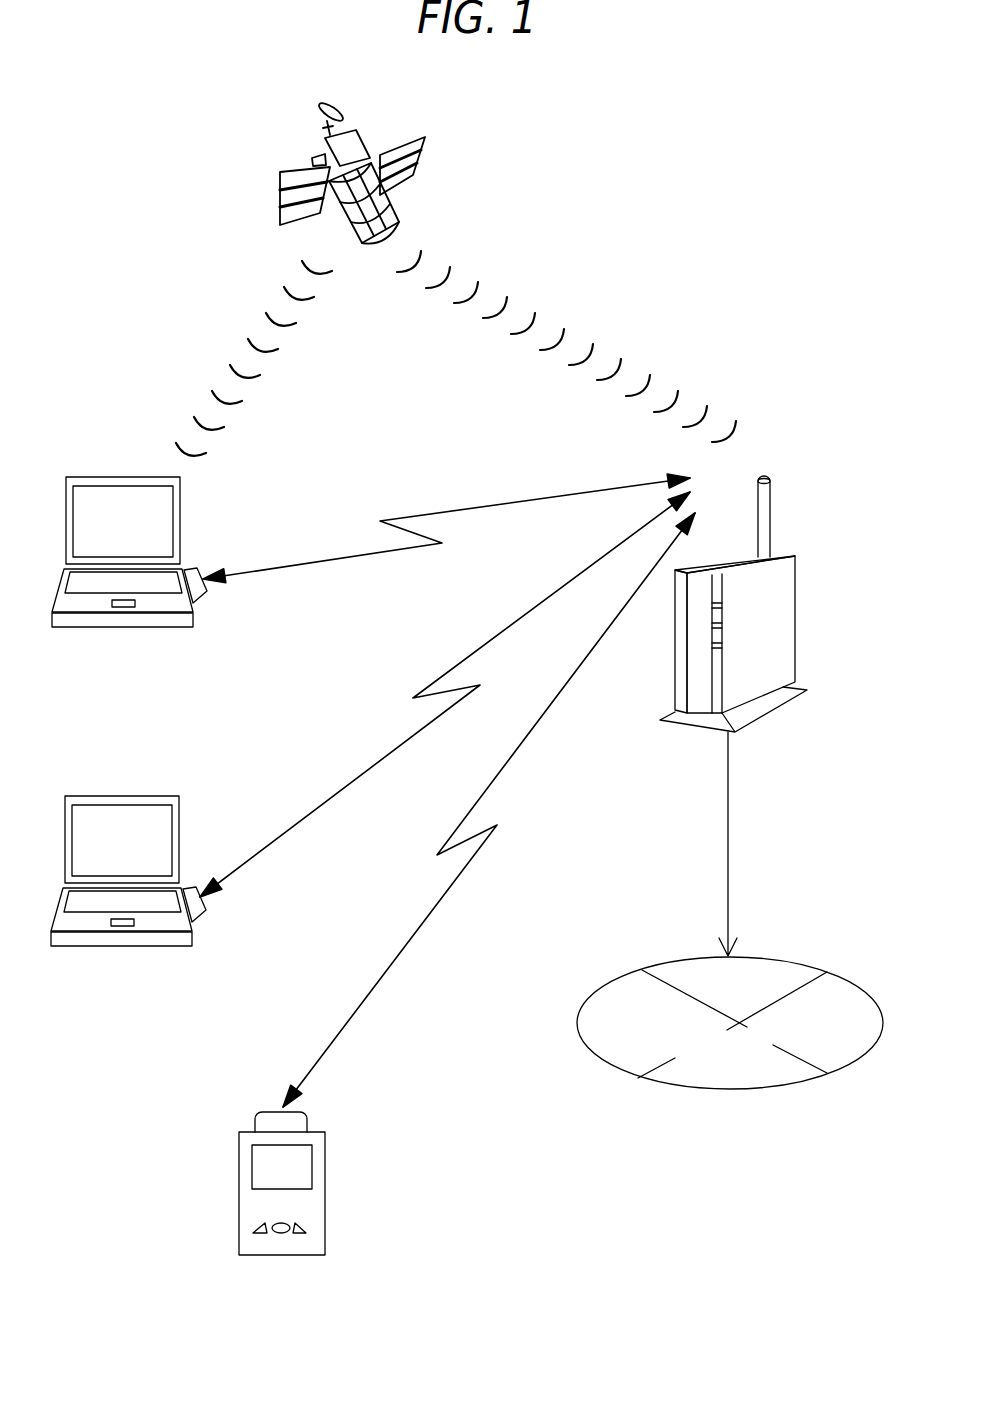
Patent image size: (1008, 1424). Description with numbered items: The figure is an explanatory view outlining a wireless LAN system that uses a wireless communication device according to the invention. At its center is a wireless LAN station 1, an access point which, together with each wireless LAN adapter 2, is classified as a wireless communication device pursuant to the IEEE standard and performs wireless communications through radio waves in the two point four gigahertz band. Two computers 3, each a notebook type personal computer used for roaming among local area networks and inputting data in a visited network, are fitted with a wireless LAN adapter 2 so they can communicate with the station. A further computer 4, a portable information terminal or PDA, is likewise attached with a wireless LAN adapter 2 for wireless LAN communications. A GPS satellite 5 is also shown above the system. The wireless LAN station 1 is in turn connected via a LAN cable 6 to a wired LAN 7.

The wireless LAN station 1 is at (797, 598).
The wireless LAN adapter 2 is at (207, 593).
The computer 3 is at (98, 477).
The computer 4 is at (325, 1204).
The GPS satellite 5 is at (420, 152).
The LAN cable 6 is at (728, 802).
The wired LAN 7 is at (725, 1092).